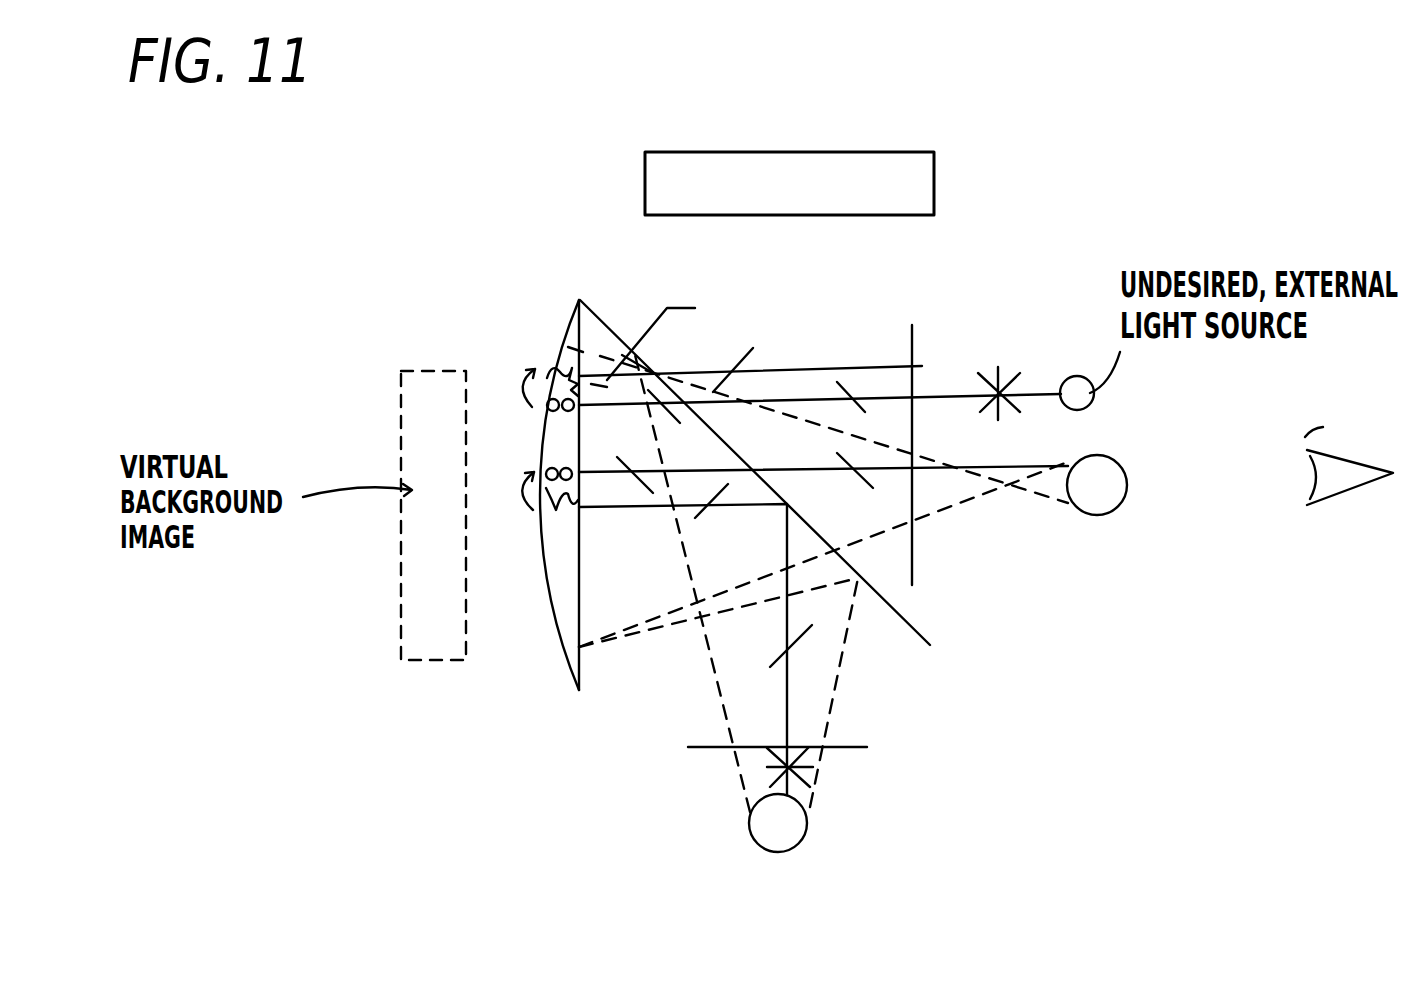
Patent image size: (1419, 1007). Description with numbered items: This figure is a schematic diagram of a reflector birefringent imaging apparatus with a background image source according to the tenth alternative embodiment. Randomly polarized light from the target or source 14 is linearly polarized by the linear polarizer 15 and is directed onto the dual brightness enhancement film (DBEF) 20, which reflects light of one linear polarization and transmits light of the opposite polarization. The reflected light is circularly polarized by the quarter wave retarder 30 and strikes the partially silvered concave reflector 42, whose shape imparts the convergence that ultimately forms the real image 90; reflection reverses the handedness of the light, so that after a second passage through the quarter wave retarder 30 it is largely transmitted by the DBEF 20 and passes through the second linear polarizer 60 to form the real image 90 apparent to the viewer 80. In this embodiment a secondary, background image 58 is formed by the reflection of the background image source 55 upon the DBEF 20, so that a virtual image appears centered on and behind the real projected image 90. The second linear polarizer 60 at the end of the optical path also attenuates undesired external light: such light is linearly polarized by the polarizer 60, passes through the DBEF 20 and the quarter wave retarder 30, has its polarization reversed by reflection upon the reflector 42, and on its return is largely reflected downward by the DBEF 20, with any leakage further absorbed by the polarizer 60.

The target or source 14 is at (768, 833).
The linear polarizer 15 is at (830, 760).
The dual brightness enhancement film (DBEF) 20 is at (632, 337).
The quarter wave retarder 30 is at (573, 347).
The partially silvered concave reflector 42 is at (579, 690).
The background image source 55 is at (680, 160).
The secondary, background image 58 is at (401, 371).
The second linear polarizer 60 is at (912, 416).
The viewer 80 is at (1348, 470).
The real image 90 is at (1106, 493).